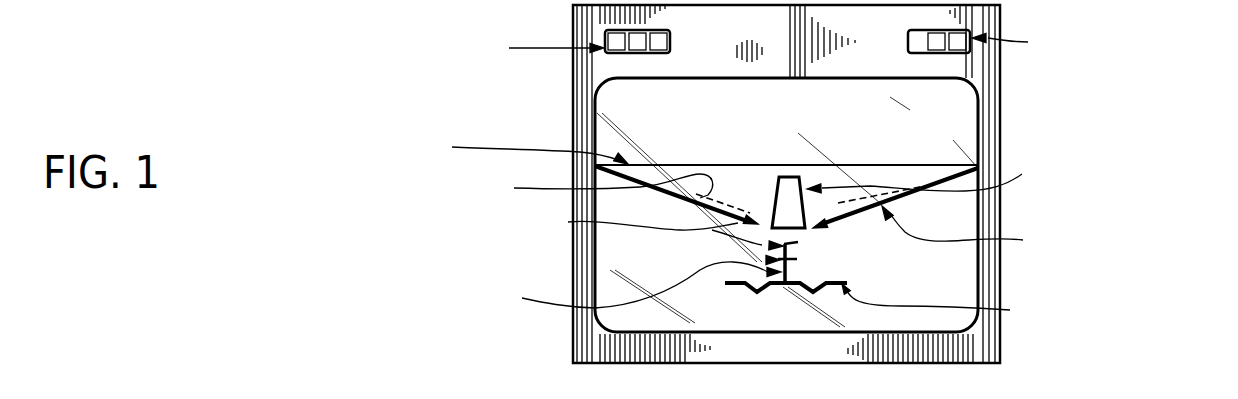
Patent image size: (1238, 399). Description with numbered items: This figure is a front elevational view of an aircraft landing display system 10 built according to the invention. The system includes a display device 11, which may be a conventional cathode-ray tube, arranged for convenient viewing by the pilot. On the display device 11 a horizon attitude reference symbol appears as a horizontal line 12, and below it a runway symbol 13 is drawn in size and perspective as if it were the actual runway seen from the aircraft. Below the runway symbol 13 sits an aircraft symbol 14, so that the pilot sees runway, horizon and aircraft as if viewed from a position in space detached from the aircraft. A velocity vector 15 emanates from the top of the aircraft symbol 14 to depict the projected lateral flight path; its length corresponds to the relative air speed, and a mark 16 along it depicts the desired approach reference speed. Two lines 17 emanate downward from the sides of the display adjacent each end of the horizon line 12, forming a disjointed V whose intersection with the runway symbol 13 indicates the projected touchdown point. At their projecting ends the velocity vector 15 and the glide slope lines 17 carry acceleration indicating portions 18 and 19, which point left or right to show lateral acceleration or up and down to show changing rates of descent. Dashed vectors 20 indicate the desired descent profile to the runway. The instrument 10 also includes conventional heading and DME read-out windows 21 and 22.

The landing display system 10 is at (560, 16).
The display device 11 is at (903, 66).
The horizontal line 12 is at (873, 165).
The runway symbol 13 is at (787, 188).
The aircraft symbol 14 is at (737, 284).
The vector 15 is at (796, 269).
The mark 16 is at (792, 257).
The lines 17 is at (669, 194).
The acceleration indicating portion 18 is at (797, 245).
The acceleration indicating portions 19 is at (769, 231).
The vectors 20 is at (714, 200).
The heading read-out window 21 is at (610, 52).
The DME read-out window 22 is at (965, 52).